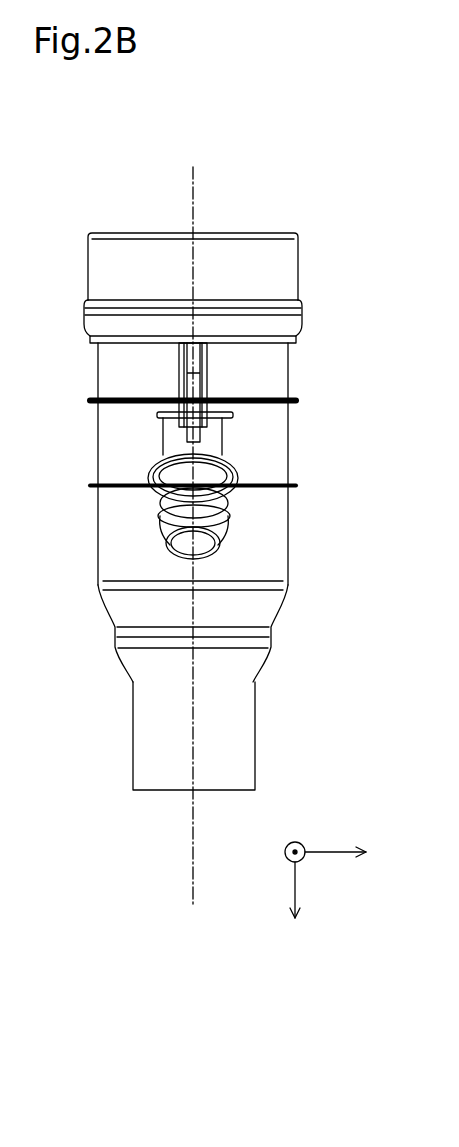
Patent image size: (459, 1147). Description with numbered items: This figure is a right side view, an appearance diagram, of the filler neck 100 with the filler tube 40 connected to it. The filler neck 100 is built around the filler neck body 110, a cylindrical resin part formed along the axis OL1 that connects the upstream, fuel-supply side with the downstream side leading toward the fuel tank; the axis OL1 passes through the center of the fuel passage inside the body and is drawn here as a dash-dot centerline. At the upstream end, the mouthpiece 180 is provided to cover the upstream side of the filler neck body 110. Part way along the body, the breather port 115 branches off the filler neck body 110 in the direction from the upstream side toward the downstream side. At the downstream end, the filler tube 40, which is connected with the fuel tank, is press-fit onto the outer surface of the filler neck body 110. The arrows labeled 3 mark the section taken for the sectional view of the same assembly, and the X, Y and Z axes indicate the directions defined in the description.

The filler neck 100 is at (85, 205).
The mouthpiece 180 is at (263, 232).
The filler neck body 110 is at (288, 440).
The breather port 115 is at (158, 535).
The filler tube 40 is at (133, 758).
The section line for FIG. 3 is at (191, 198).
The axis OL1 is at (192, 525).